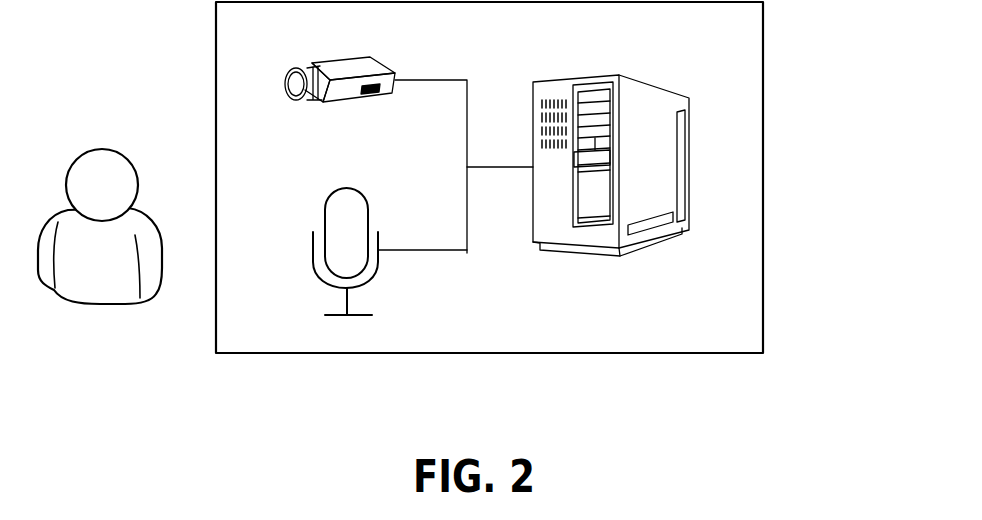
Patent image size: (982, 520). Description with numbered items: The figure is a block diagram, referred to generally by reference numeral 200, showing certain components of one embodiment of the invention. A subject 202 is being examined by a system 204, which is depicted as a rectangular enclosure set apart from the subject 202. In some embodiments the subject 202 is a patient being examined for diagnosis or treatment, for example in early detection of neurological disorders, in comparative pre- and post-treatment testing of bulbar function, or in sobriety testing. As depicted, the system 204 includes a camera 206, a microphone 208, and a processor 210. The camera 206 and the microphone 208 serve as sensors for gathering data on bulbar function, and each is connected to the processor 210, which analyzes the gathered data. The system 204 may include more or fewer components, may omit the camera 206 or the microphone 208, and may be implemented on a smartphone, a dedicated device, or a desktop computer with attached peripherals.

The block diagram 200 is at (785, 146).
The subject 202 is at (69, 298).
The system 204 is at (286, 355).
The camera 206 is at (334, 59).
The microphone 208 is at (374, 285).
The processor 210 is at (640, 249).